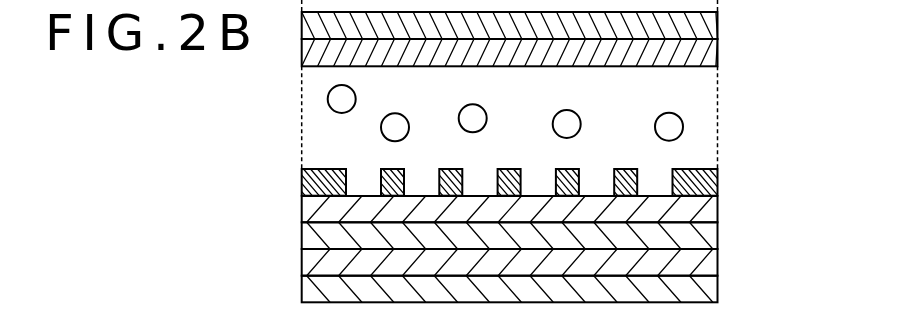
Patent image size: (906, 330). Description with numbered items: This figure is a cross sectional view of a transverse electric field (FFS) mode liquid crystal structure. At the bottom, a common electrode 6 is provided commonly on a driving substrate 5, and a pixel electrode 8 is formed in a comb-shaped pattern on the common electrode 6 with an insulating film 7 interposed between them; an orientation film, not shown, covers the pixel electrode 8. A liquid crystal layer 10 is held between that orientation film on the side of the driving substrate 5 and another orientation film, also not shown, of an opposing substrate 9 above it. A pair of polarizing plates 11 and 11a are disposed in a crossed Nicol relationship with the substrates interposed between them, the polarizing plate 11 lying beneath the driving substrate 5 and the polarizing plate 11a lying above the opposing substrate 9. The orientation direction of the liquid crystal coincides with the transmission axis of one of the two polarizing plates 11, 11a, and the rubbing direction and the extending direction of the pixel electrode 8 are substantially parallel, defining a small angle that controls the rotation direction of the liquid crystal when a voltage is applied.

The polarizing plate 11a is at (703, 29).
The opposing substrate 9 is at (703, 56).
The liquid crystal layer 10 is at (684, 125).
The pixel electrode 8 is at (703, 186).
The insulating film 7 is at (703, 213).
The common electrode 6 is at (705, 239).
The driving substrate 5 is at (705, 265).
The polarizing plate 11 is at (705, 291).